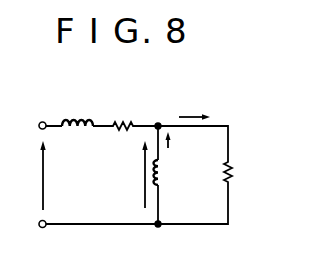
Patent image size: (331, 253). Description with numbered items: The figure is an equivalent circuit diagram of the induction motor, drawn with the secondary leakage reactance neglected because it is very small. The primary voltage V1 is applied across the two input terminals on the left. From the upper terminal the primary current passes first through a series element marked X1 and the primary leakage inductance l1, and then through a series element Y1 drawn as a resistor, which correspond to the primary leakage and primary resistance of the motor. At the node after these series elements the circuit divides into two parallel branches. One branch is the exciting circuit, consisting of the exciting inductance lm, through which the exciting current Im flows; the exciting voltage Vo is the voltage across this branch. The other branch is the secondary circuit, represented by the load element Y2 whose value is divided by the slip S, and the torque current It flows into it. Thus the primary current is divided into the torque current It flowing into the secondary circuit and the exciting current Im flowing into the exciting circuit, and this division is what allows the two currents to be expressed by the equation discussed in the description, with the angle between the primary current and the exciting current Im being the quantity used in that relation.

The primary leakage reactance (alternative designation of l1) X1 is at (72, 96).
The primary leakage inductance l1 is at (77, 107).
The primary resistance/admittance element Y1 is at (122, 108).
The exciting inductance lm is at (179, 175).
The secondary load element Y2'/S Y2 is at (258, 173).
The primary (input) voltage V1 is at (30, 175).
The exciting voltage Vo is at (132, 174).
The exciting current Im is at (185, 145).
The torque current It is at (206, 118).